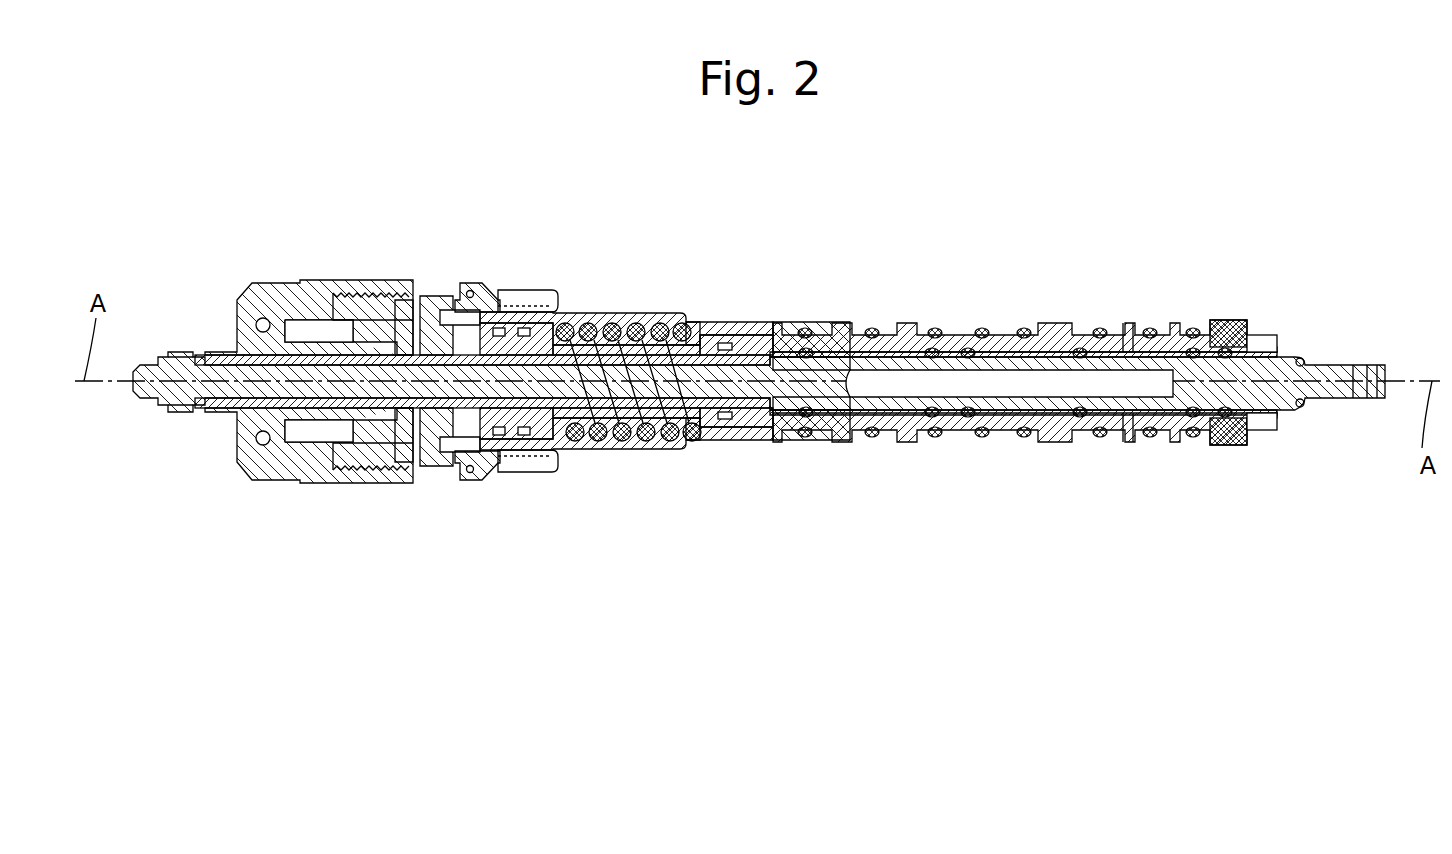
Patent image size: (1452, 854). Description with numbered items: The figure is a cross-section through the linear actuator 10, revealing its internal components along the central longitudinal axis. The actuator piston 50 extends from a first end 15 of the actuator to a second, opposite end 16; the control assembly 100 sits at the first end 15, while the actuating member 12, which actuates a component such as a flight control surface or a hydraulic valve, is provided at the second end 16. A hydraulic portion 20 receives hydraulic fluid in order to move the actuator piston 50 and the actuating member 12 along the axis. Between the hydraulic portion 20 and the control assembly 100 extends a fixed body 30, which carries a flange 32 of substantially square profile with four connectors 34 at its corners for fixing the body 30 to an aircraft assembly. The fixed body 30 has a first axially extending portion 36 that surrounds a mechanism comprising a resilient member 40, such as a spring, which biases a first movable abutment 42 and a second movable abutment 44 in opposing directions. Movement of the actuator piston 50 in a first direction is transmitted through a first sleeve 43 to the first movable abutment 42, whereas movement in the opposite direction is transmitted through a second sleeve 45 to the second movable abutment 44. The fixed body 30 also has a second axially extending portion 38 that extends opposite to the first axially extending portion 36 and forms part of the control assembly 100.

The actuator 10 is at (252, 572).
The actuating member 12 is at (1338, 383).
The first end 15 is at (191, 300).
The second end 16 is at (1330, 315).
The hydraulic portion 20 is at (710, 486).
The fixed body 30 is at (477, 462).
The flange 32 is at (490, 288).
The connectors 34 is at (527, 300).
The first axially extending portion 36 is at (603, 450).
The second axially extending portion 38 is at (417, 468).
The resilient member 40 is at (636, 332).
The first movable abutment 42 is at (590, 336).
The first sleeve 43 is at (572, 340).
The second movable abutment 44 is at (684, 328).
The second sleeve 45 is at (711, 330).
The actuator piston 50 is at (745, 380).
The control assembly 100 is at (337, 500).